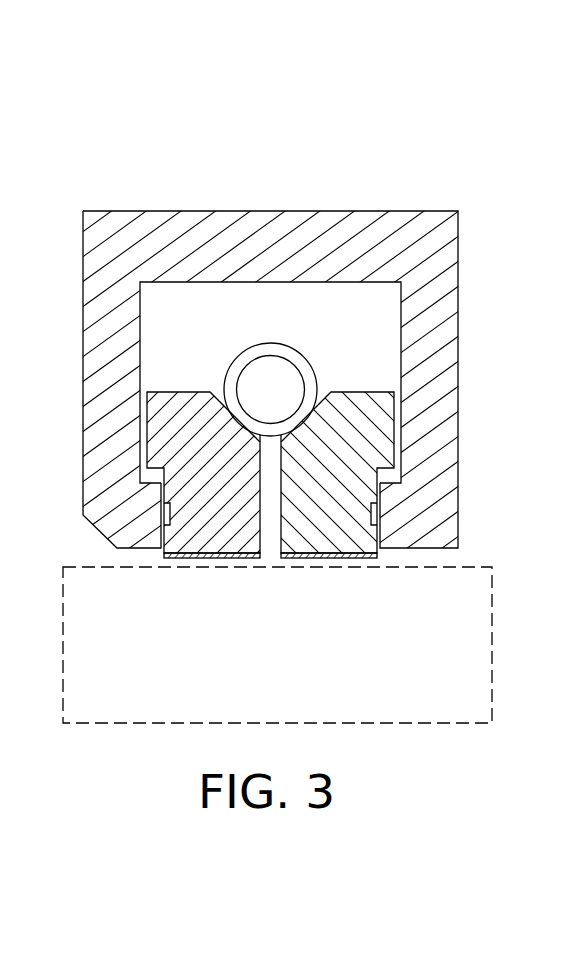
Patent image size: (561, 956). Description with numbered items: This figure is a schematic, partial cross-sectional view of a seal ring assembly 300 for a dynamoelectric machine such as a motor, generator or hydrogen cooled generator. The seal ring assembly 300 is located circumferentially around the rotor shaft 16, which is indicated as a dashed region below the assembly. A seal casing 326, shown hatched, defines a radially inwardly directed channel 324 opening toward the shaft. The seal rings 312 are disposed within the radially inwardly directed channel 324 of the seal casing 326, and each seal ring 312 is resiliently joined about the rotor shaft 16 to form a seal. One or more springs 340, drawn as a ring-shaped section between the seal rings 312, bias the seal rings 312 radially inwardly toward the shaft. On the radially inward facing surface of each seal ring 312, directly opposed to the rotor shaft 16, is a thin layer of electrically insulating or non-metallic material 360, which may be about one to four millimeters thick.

The seal ring assembly 300 is at (129, 151).
The seal casing 326 is at (338, 238).
The radially inwardly directed channel 324 is at (377, 343).
The springs 340 is at (236, 357).
The seal rings 312 is at (176, 414).
The electrically insulating material 360 is at (193, 558).
The rotor shaft 16 is at (283, 659).